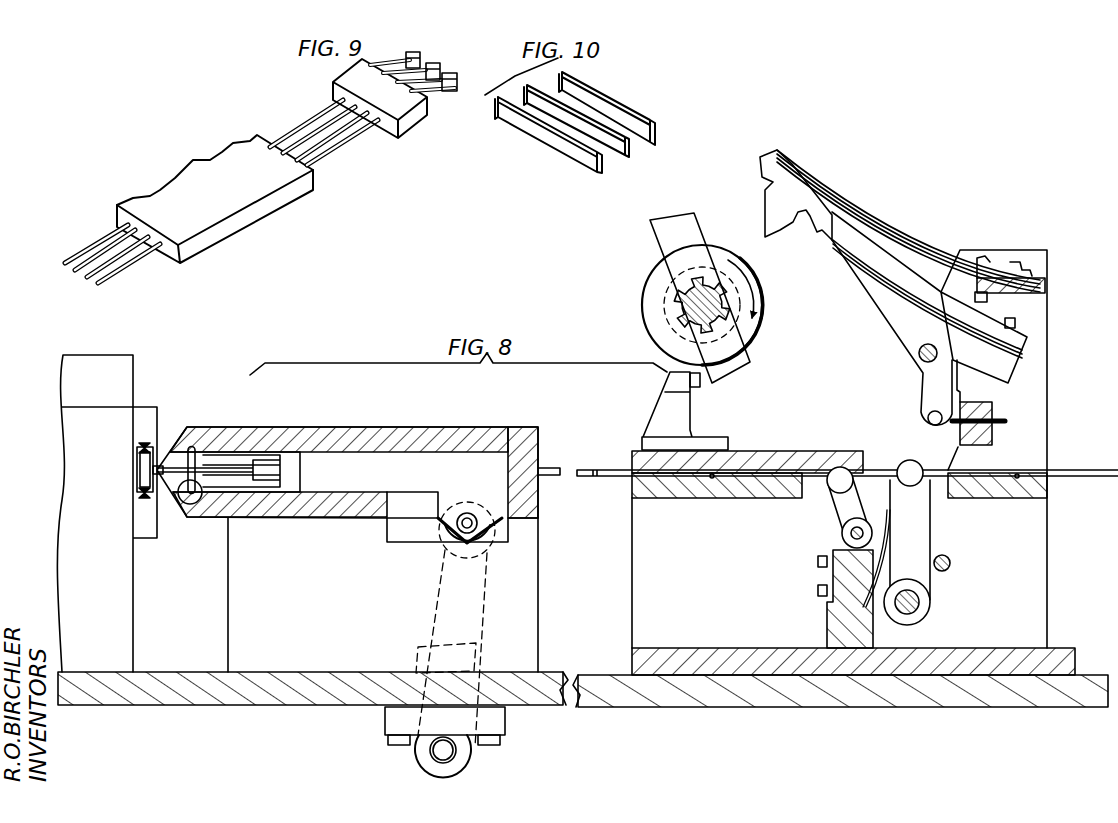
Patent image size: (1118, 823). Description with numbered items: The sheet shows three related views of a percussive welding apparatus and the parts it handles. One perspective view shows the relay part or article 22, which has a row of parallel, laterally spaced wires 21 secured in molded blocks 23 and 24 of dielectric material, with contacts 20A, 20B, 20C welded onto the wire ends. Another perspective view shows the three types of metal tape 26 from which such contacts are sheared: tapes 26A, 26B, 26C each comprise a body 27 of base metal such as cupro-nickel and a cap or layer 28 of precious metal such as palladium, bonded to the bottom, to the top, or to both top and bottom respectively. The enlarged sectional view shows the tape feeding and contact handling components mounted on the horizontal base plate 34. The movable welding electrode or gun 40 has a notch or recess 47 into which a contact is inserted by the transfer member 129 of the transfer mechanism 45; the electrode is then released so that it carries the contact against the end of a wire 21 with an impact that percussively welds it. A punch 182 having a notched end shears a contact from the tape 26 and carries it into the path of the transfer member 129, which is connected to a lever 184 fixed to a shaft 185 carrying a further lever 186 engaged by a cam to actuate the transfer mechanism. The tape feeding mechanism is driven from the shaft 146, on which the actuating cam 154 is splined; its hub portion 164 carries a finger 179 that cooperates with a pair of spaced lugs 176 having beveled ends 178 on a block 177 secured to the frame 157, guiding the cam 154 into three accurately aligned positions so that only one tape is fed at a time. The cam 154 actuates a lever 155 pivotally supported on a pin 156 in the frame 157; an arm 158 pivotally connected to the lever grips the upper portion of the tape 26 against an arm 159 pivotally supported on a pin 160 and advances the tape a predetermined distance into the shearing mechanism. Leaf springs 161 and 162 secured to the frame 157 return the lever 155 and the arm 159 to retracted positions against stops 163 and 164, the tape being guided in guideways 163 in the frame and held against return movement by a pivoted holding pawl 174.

In FIG. 9, the contact 20A is at (452, 75).
In FIG. 9, the contact 20B is at (437, 66).
In FIG. 9, the contact 20C is at (418, 55).
In FIG. 9, the wires 21 is at (322, 148).
In FIG. 9, the relay part or article 22 is at (228, 122).
In FIG. 9, the molded block 23 is at (413, 128).
In FIG. 9, the molded block 24 is at (266, 202).
In FIG. 8, the molded block 24 is at (70, 448).
In FIG. 10, the tape 26 is at (540, 143).
In FIG. 8, the tape 26 is at (612, 470).
In FIG. 10, the tape 26A is at (595, 173).
In FIG. 10, the tape 26B is at (627, 155).
In FIG. 10, the tape 26C is at (653, 140).
In FIG. 10, the body 27 is at (578, 162).
In FIG. 10, the cap or layer 28 is at (570, 137).
In FIG. 8, the base plate 34 is at (210, 706).
In FIG. 8, the welding electrode 40 is at (150, 463).
In FIG. 8, the transfer mechanism 45 is at (437, 556).
In FIG. 8, the notch 47 is at (160, 470).
In FIG. 8, the transfer member 129 is at (200, 466).
In FIG. 8, the shaft 146 is at (690, 312).
In FIG. 8, the actuating cam 154 is at (668, 243).
In FIG. 8, the lever 155 is at (799, 238).
In FIG. 8, the pin 156 is at (918, 357).
In FIG. 8, the frame 157 is at (1050, 330).
In FIG. 8, the arm 158 is at (920, 438).
In FIG. 8, the arm 159 is at (925, 546).
In FIG. 8, the pin 160 is at (928, 607).
In FIG. 8, the leaf spring 161 is at (917, 247).
In FIG. 8, the leaf spring 162 is at (895, 520).
In FIG. 8, the stop 163 is at (711, 478).
In FIG. 8, the stop 164 is at (662, 305).
In FIG. 8, the holding pawl 174 is at (836, 500).
In FIG. 8, the lugs 176 is at (687, 392).
In FIG. 8, the block 177 is at (663, 412).
In FIG. 8, the beveled ends 178 is at (701, 380).
In FIG. 8, the finger 179 is at (733, 372).
In FIG. 8, the punch 182 is at (196, 440).
In FIG. 8, the lever 184 is at (478, 623).
In FIG. 8, the shaft 185 is at (455, 752).
In FIG. 8, the lever 186 is at (418, 664).